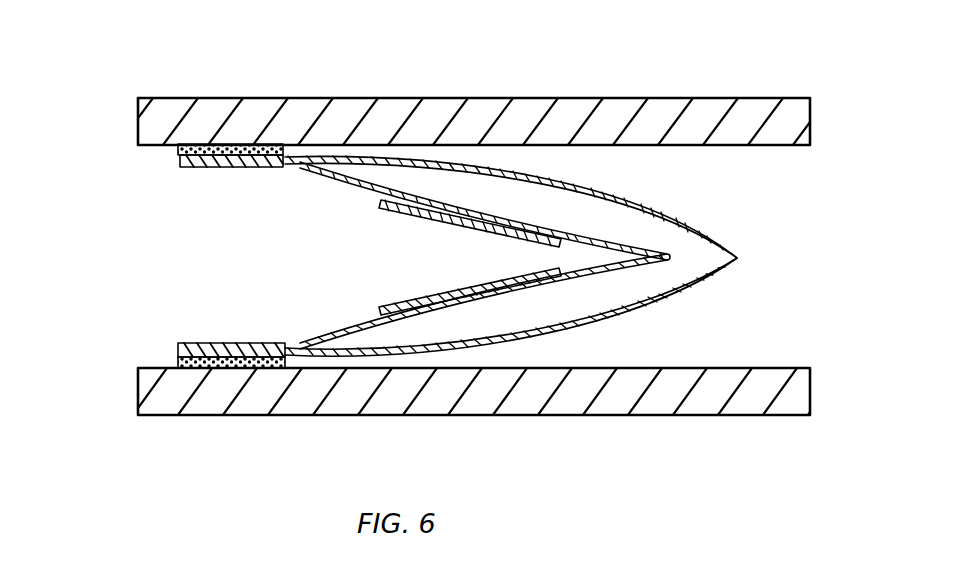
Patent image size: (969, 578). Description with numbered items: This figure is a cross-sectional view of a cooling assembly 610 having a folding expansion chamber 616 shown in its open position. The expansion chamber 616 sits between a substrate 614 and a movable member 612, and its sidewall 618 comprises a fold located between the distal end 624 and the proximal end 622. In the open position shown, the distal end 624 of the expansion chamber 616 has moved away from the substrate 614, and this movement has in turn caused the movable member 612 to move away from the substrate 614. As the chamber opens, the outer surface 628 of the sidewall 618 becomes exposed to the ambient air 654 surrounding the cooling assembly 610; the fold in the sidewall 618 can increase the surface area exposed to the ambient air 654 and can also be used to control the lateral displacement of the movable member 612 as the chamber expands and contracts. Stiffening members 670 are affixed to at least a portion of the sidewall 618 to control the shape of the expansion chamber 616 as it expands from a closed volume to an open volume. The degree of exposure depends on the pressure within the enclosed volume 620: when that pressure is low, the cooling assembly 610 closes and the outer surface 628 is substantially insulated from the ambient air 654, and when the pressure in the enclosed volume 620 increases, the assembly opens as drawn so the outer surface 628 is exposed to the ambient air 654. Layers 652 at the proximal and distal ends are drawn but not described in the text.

The cooling assembly 610 is at (338, 56).
The movable member 612 is at (622, 97).
The substrate 614 is at (245, 417).
The expansion chamber 616 is at (685, 262).
The sidewall 618 is at (340, 332).
The enclosed volume 620 is at (560, 321).
The proximal end 622 is at (178, 348).
The distal end 624 is at (180, 164).
The outer surface 628 is at (343, 187).
The electrode 652 is at (178, 148).
The ambient air 654 is at (288, 270).
The stiffening member 670 is at (460, 287).